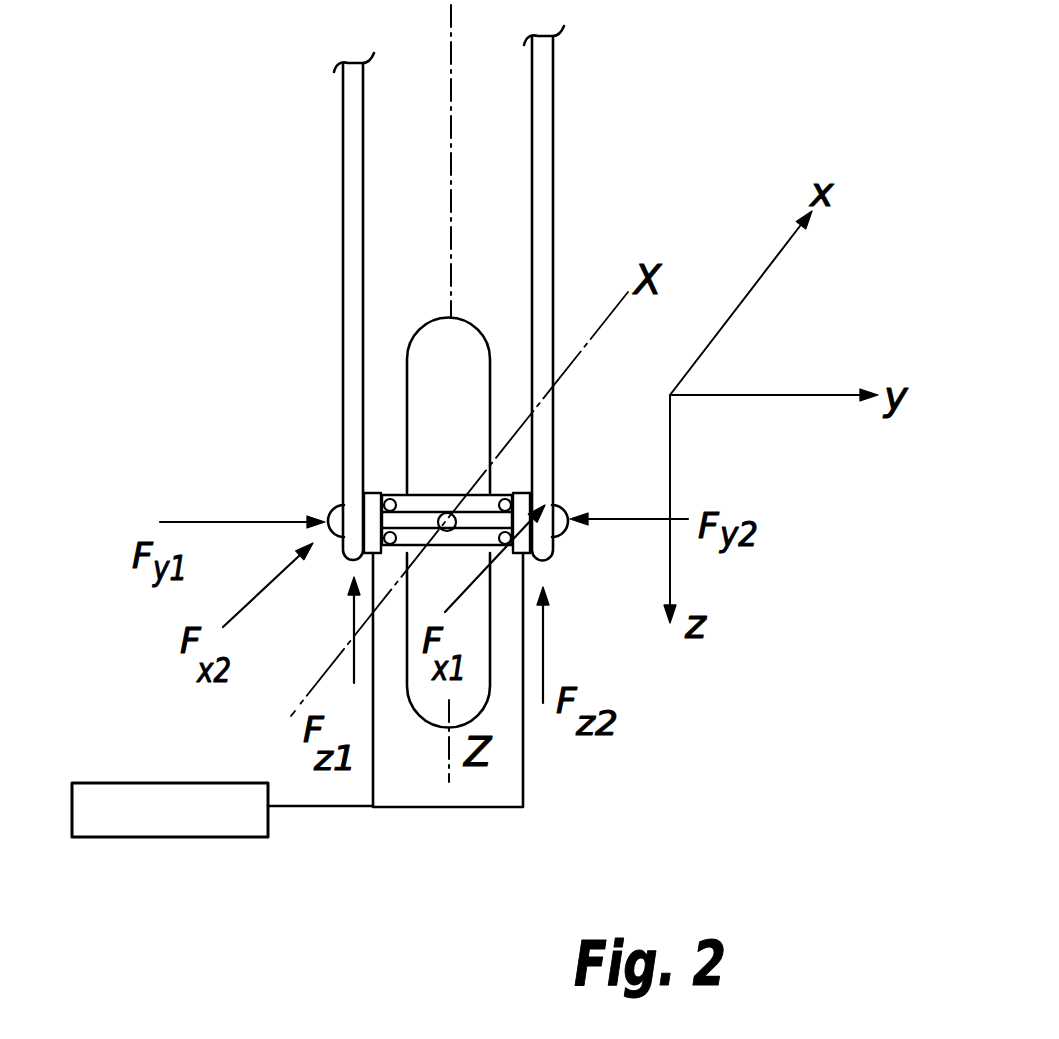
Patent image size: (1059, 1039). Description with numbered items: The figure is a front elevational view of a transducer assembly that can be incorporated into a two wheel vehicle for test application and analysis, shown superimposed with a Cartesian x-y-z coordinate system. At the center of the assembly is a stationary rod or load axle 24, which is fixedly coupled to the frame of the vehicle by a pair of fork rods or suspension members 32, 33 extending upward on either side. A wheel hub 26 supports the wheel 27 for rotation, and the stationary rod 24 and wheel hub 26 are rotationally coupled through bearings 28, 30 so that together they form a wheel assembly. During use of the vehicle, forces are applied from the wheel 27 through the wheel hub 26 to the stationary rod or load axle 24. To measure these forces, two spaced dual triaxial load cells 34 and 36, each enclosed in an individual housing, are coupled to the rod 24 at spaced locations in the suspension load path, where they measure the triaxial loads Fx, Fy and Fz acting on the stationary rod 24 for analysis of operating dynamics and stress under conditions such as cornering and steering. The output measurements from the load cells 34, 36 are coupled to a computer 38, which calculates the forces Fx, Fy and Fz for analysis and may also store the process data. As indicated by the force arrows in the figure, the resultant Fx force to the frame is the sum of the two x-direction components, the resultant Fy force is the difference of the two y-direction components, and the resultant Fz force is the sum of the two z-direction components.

The stationary rod or load axle 24 is at (448, 443).
The wheel hub 26 is at (397, 547).
The wheel 27 is at (458, 320).
The bearing 28 is at (395, 488).
The bearing 30 is at (503, 488).
The fork rod or suspension member 32 is at (341, 168).
The fork rod or suspension member 33 is at (555, 137).
The triaxial load cell 34 is at (368, 490).
The triaxial load cell 36 is at (527, 490).
The computer 38 is at (148, 783).